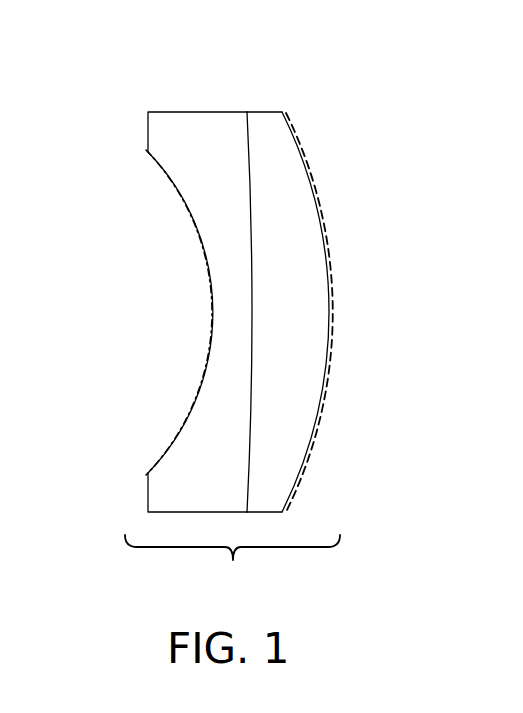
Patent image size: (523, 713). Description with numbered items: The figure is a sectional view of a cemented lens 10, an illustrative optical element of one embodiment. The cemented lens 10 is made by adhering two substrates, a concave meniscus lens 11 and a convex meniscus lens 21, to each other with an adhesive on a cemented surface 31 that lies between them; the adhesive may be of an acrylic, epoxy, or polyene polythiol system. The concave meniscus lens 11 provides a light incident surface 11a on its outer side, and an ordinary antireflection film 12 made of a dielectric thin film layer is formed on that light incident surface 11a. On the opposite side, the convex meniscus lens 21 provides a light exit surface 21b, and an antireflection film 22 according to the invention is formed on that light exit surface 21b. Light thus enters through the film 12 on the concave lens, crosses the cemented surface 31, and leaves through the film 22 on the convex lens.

The cemented lens 10 is at (261, 310).
The concave meniscus lens 11 is at (158, 311).
The light incident surface 11a is at (209, 273).
The antireflection film 12 is at (201, 377).
The convex meniscus lens 21 is at (350, 312).
The light exit surface 21b is at (330, 277).
The antireflection film 22 is at (316, 438).
The cemented surface 31 is at (247, 112).